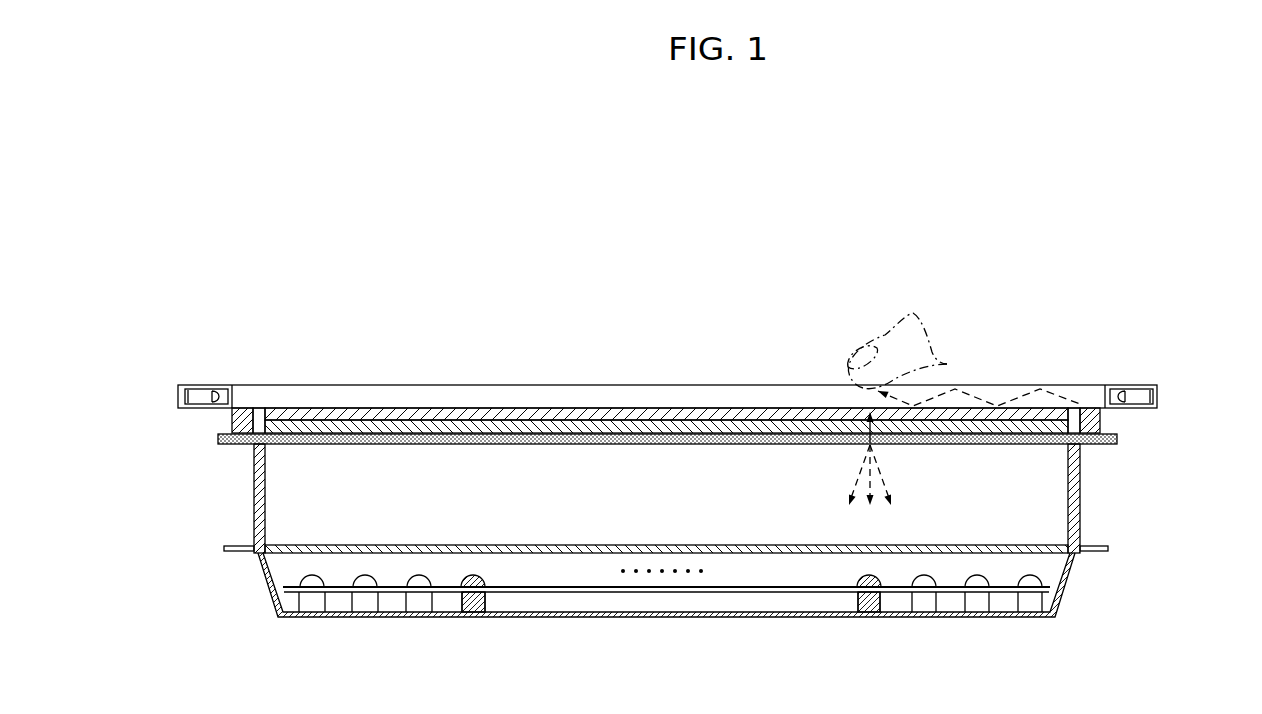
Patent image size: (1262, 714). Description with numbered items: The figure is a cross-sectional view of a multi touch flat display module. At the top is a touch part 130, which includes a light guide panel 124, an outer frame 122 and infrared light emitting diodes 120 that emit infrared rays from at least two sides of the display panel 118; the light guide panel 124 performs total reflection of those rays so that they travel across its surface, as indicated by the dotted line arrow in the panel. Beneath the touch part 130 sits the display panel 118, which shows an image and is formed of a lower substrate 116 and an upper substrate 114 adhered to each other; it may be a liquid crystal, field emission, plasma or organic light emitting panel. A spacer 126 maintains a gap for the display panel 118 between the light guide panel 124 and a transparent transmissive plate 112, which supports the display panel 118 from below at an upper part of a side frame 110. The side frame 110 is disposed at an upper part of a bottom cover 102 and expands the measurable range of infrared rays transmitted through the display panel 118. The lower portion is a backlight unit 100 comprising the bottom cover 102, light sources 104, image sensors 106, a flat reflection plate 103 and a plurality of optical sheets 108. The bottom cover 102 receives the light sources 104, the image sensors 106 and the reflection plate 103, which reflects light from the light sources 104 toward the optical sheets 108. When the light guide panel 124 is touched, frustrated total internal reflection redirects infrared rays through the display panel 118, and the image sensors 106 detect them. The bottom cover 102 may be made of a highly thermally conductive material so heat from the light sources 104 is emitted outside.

The backlight unit 100 is at (1187, 545).
The bottom cover 102 is at (1062, 596).
The flat reflection plate 103 is at (1010, 590).
The light sources 104 is at (980, 597).
The image sensors 106 is at (862, 605).
The optical sheets 108 is at (1020, 551).
The side frame 110 is at (1081, 495).
The transparent transmissive plate 112 is at (1116, 440).
The upper substrate 114 is at (1047, 417).
The lower substrate 116 is at (1012, 430).
The display panel 118 is at (1098, 316).
The infrared light emitting diodes 120 is at (1127, 396).
The outer frame 122 is at (1158, 396).
The light guide panel 124 is at (750, 397).
The spacer 126 is at (1101, 420).
The touch part 130 is at (165, 382).